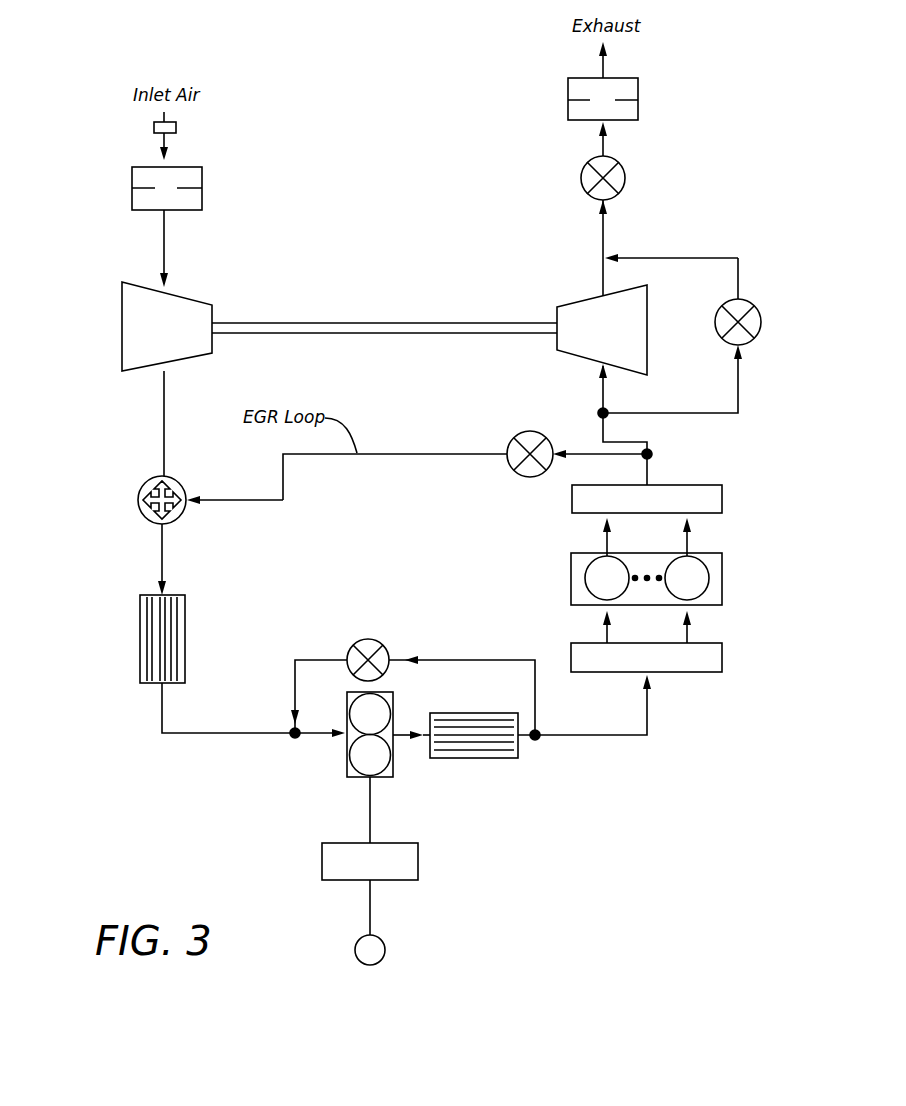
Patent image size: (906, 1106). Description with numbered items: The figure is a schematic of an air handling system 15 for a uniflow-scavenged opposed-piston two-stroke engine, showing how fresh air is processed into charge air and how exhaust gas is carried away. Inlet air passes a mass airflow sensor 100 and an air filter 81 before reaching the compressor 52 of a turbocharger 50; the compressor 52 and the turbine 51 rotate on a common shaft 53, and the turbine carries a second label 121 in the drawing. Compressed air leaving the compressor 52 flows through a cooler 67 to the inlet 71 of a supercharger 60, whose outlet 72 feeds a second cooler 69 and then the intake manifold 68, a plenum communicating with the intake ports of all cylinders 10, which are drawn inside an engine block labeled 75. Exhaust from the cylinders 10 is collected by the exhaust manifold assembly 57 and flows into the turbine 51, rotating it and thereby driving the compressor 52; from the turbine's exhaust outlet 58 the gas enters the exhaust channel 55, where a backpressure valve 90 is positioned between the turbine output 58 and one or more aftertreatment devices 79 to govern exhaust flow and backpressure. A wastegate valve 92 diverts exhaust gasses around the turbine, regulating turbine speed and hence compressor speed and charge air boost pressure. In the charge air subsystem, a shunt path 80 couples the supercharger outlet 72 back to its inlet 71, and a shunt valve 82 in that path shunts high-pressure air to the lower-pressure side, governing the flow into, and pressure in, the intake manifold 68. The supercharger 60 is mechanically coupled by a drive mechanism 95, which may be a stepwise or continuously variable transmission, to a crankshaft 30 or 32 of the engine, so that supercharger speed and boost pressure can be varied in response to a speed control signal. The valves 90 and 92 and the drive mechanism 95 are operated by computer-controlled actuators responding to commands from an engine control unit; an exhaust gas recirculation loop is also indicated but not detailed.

The air handling system 15 is at (76, 232).
The mass airflow sensor 100 is at (176, 128).
The air filter 81 is at (202, 180).
The turbocharger 50 is at (302, 259).
The compressor 52 is at (132, 372).
The common shaft 53 is at (353, 322).
The turbine 51 is at (583, 360).
The turbine 121 is at (647, 350).
The exhaust channel 55 is at (663, 180).
The backpressure valve 90 is at (581, 180).
The aftertreatment devices 79 is at (638, 105).
The exhaust outlet 58 is at (603, 275).
The wastegate valve 92 is at (762, 318).
The exhaust manifold assembly 57 is at (722, 497).
The cylinders 10 is at (585, 580).
The engine 75 is at (652, 570).
The intake manifold 68 is at (722, 655).
The cooler 67 is at (140, 638).
The shunt path 80 is at (433, 634).
The shunt valve 82 is at (363, 640).
The supercharger 60 is at (393, 700).
The supercharger inlet 71 is at (310, 740).
The supercharger outlet 72 is at (398, 738).
The second cooler 69 is at (498, 760).
The drive mechanism 95 is at (418, 860).
The crankshaft 30 is at (421, 923).
The crankshaft 32 is at (385, 950).